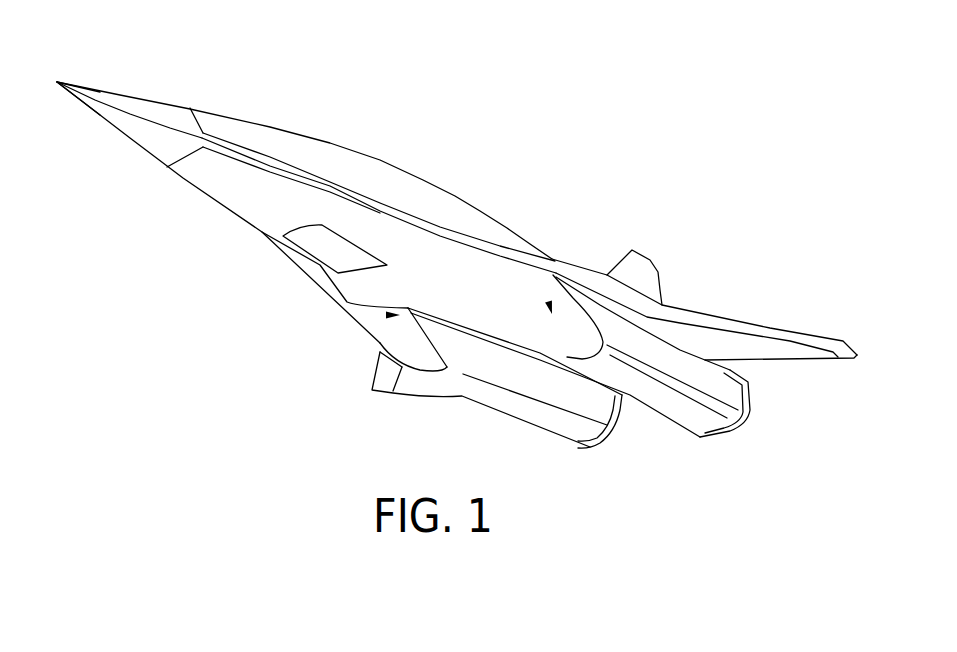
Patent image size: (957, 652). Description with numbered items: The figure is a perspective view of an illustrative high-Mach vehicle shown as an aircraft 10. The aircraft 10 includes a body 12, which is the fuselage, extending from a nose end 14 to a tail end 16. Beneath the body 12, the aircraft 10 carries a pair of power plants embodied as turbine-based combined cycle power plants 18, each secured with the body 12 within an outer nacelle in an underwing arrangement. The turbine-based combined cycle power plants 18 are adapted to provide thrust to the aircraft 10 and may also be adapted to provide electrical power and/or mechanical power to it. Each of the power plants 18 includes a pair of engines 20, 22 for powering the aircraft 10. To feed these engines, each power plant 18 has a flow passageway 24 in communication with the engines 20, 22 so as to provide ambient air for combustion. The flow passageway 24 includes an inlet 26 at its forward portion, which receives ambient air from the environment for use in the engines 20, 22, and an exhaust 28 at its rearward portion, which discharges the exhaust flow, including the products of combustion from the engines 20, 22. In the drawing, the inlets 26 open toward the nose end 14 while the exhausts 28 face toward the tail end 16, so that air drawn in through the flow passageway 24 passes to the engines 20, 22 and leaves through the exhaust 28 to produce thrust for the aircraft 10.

The aircraft 10 is at (631, 172).
The body 12 is at (264, 123).
The nose end 14 is at (51, 62).
The tail end 16 is at (750, 290).
The turbine-based combined cycle power plant 18 is at (468, 421).
The engine 20 is at (470, 371).
The engine 22 is at (712, 382).
The flow passageway 24 is at (549, 302).
The inlet 26 is at (400, 348).
The exhaust 28 is at (642, 440).